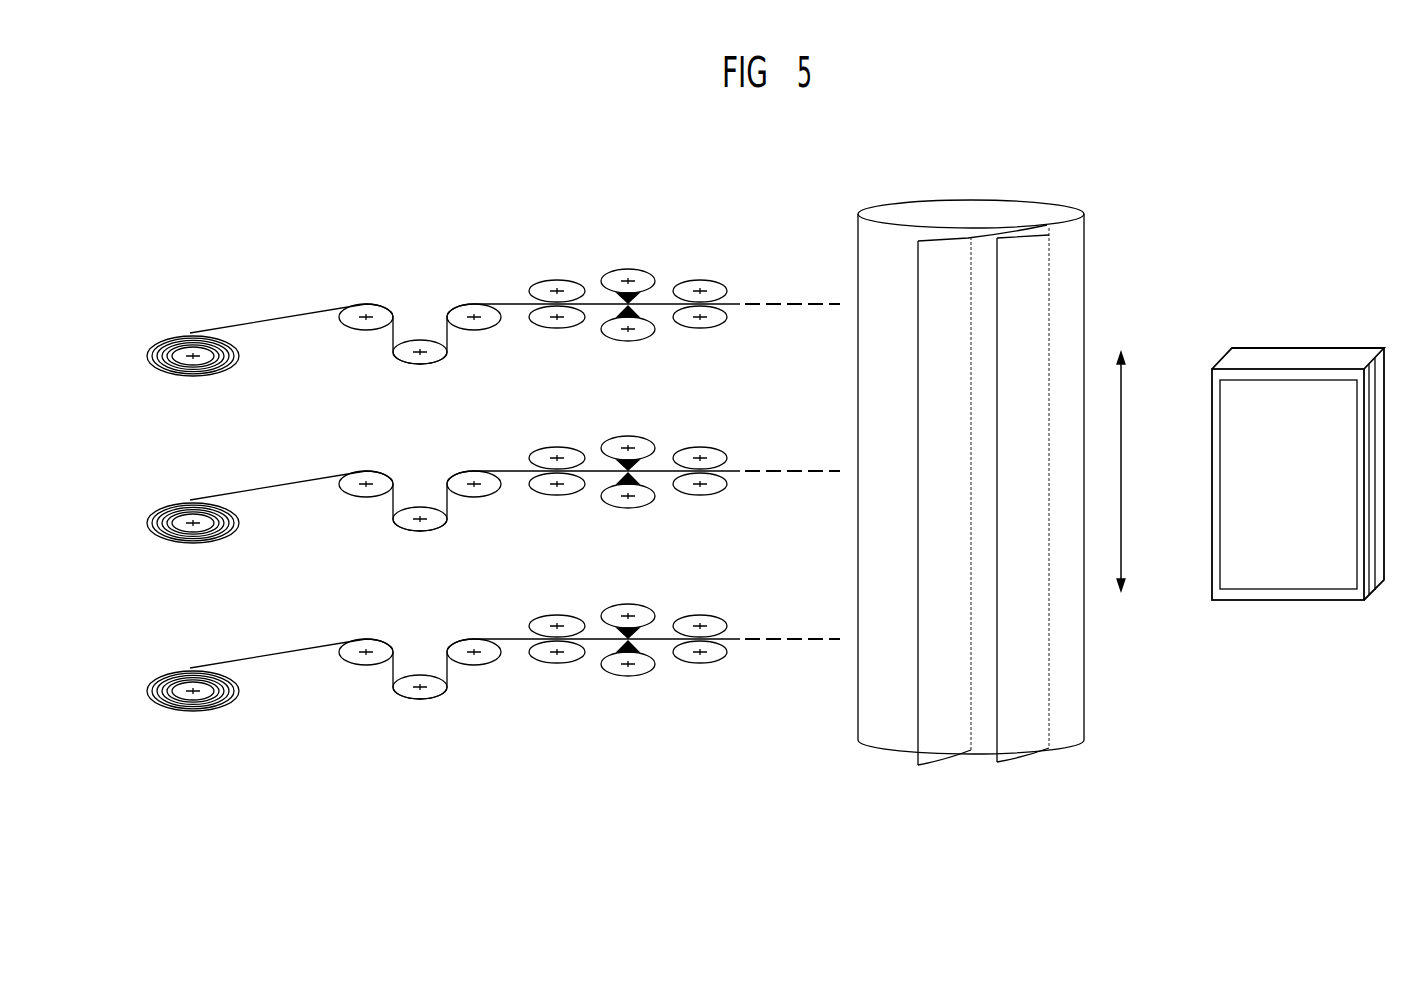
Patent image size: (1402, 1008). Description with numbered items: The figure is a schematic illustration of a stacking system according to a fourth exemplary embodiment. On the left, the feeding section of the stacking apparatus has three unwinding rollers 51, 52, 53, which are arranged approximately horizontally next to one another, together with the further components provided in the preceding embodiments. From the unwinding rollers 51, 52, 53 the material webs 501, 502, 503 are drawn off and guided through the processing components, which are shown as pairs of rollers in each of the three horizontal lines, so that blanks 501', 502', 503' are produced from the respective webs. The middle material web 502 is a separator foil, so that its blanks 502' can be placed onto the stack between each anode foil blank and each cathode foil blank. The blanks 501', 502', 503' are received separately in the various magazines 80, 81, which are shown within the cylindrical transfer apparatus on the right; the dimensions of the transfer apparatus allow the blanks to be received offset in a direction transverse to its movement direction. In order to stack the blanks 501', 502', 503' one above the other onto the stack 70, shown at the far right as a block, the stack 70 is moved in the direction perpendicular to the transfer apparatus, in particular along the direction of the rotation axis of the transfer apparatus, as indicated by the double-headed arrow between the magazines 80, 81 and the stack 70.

The unwinding roller 51 is at (189, 333).
The unwinding roller 52 is at (193, 483).
The unwinding roller 53 is at (193, 652).
The material web 501 is at (465, 304).
The middle material web 502 is at (465, 469).
The material web 503 is at (465, 637).
The blank 501' is at (792, 260).
The blank 502' is at (792, 426).
The blank 503' is at (792, 594).
The magazine 80 is at (947, 253).
The magazine 81 is at (1025, 253).
The stack 70 is at (1309, 358).